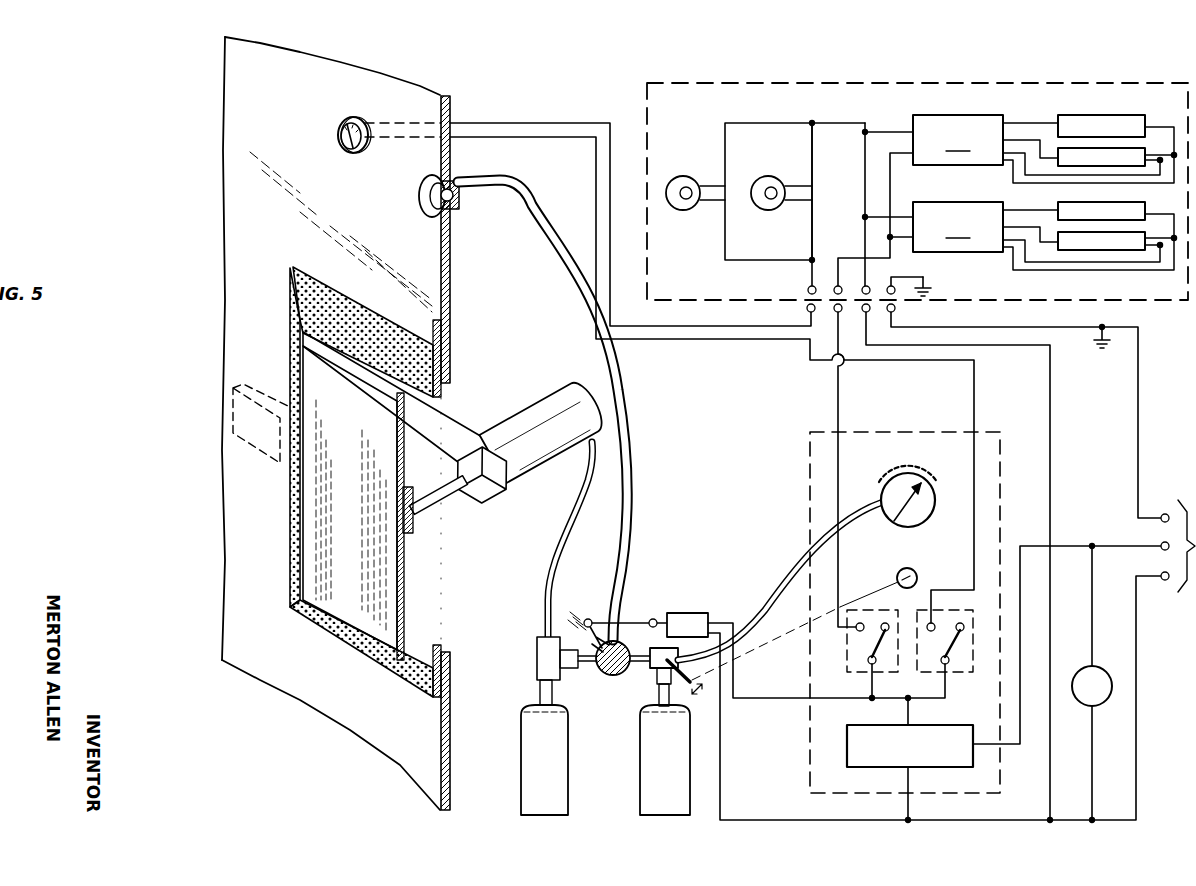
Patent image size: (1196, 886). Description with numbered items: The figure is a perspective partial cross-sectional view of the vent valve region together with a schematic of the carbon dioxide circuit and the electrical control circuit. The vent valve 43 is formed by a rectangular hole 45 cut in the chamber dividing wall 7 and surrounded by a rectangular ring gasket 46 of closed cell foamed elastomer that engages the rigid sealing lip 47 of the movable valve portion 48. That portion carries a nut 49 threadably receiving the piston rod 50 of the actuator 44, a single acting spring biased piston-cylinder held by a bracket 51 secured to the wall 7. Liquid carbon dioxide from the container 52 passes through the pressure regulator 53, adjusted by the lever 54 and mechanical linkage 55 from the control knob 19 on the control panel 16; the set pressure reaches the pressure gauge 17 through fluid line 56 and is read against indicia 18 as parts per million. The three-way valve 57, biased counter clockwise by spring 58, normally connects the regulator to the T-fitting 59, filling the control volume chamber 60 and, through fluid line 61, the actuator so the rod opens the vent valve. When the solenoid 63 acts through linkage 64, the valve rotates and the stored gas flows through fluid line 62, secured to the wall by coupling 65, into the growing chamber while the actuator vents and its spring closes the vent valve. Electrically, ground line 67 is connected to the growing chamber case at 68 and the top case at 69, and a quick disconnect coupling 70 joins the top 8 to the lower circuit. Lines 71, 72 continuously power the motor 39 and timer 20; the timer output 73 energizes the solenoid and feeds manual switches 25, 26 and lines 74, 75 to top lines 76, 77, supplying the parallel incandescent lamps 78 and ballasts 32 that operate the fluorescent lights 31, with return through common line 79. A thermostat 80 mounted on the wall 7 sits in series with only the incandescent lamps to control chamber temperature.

The chamber dividing wall 7 is at (447, 274).
The top 8 is at (830, 82).
The control panel 16 is at (808, 452).
The pressure gauge 17 is at (907, 523).
The indicia 18 is at (884, 478).
The control knob 19 is at (918, 580).
The timer 20 is at (920, 727).
The manual switch 25 is at (856, 650).
The manual switch 26 is at (960, 640).
The fluorescent lights 31 is at (1092, 115).
The ballasts 32 is at (958, 183).
The motor 39 is at (1082, 703).
The vent valve 43 is at (328, 641).
The actuator 44 is at (535, 455).
The rectangular hole 45 is at (447, 650).
The rectangular ring gasket 46 is at (449, 366).
The sealing lip 47 is at (318, 328).
The movable valve portion 48 is at (337, 515).
The nut 49 is at (413, 530).
The piston rod 50 is at (450, 505).
The bracket 51 is at (450, 426).
The container 52 is at (665, 798).
The pressure regulator 53 is at (655, 670).
The lever 54 is at (681, 690).
The mechanical linkage 55 is at (786, 642).
The fluid line 56 is at (784, 598).
The three-way valve 57 is at (600, 670).
The spring 58 is at (589, 618).
The T-fitting 59 is at (537, 655).
The control volume chamber 60 is at (530, 770).
The fluid line 61 is at (560, 541).
The fluid line 62 is at (630, 522).
The solenoid 63 is at (690, 615).
The linkage 64 is at (632, 621).
The coupling 65 is at (455, 206).
The ground line 67 is at (1140, 428).
The growing chamber case ground connection 68 is at (1100, 331).
The top case ground connection 69 is at (931, 282).
The quick disconnect coupling 70 is at (896, 309).
The power plug line 71 is at (1140, 644).
The power line 72 is at (1068, 545).
The timer output 73 is at (906, 704).
The line 74 is at (840, 406).
The line 75 is at (976, 406).
The top line 76 is at (851, 257).
The top line 77 is at (808, 276).
The incandescent lamps 78 is at (684, 176).
The common line 79 is at (1052, 428).
The thermostat 80 is at (338, 140).